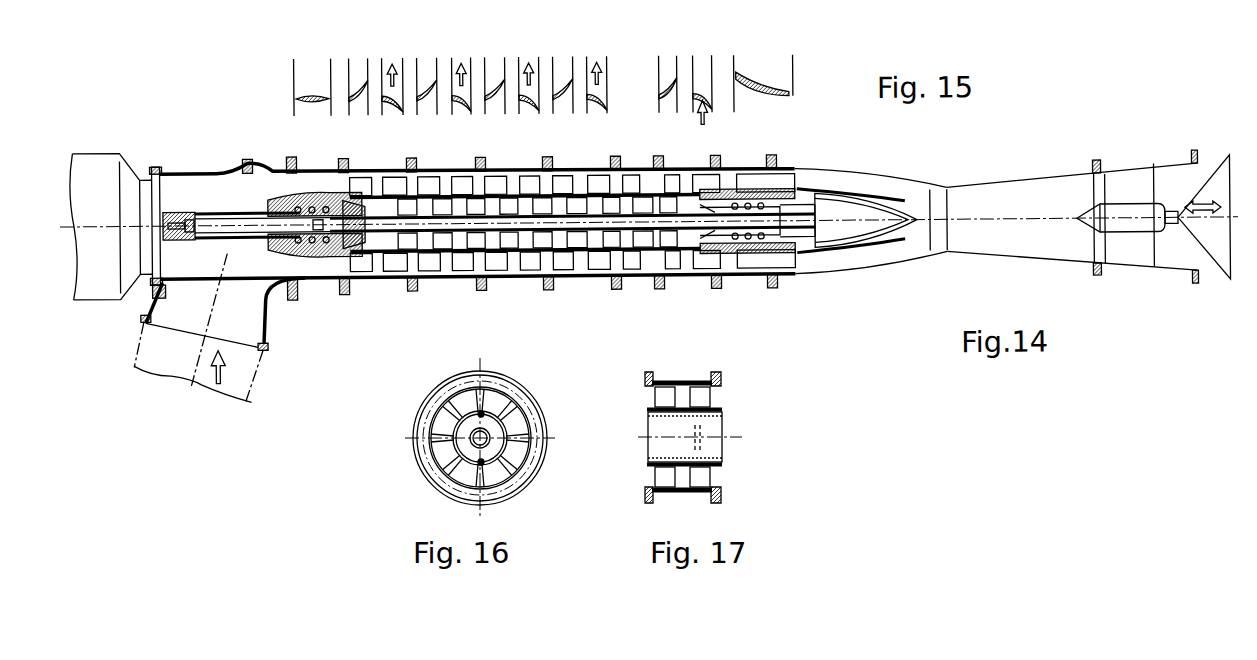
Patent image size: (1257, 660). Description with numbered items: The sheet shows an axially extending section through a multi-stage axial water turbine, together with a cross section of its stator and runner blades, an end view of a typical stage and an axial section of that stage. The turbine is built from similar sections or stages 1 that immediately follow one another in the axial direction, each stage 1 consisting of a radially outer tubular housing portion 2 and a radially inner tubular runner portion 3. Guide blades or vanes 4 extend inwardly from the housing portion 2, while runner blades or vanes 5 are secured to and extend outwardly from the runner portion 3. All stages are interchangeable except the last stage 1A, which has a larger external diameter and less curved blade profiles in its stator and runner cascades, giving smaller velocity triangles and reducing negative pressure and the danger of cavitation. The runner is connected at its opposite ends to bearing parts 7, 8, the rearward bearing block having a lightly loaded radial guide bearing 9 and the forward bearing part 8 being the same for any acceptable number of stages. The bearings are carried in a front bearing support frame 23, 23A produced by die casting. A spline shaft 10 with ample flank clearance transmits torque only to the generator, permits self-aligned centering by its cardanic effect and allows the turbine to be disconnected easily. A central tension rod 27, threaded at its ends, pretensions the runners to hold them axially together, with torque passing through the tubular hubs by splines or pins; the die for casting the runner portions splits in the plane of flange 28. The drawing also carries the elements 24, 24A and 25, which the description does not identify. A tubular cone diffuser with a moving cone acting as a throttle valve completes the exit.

In FIG. 14, the turbine section or stage 1 is at (587, 294).
In FIG. 14, the last stage 1A is at (692, 296).
In FIG. 17, the housing portion 2 is at (683, 382).
In FIG. 17, the runner portion 3 is at (710, 418).
In FIG. 14, the guide blades or vanes 4 is at (567, 181).
In FIG. 15, the guide blades or vanes 4 is at (513, 107).
In FIG. 17, the guide blades or vanes 4 is at (660, 398).
In FIG. 14, the runner blades or vanes 5 is at (600, 181).
In FIG. 15, the runner blades or vanes 5 is at (547, 98).
In FIG. 17, the runner blades or vanes 5 is at (700, 398).
In FIG. 14, the bearing part 7 is at (327, 254).
In FIG. 14, the forward bearing part 8 is at (360, 254).
In FIG. 14, the radial guide bearing 9 is at (298, 254).
In FIG. 14, the spline shaft 10 is at (233, 210).
In FIG. 14, the bearing support frame 23 is at (750, 167).
In FIG. 15, the bearing support frame part 23A is at (780, 168).
In FIG. 14, the inlet guide vane 24 is at (304, 185).
In FIG. 15, the inlet guide vane section 24A is at (316, 193).
In FIG. 16, the struts 25 is at (483, 412).
In FIG. 17, the struts 25 is at (650, 415).
In FIG. 14, the central tension rod 27 is at (630, 227).
In FIG. 14, the flange 28 is at (597, 240).